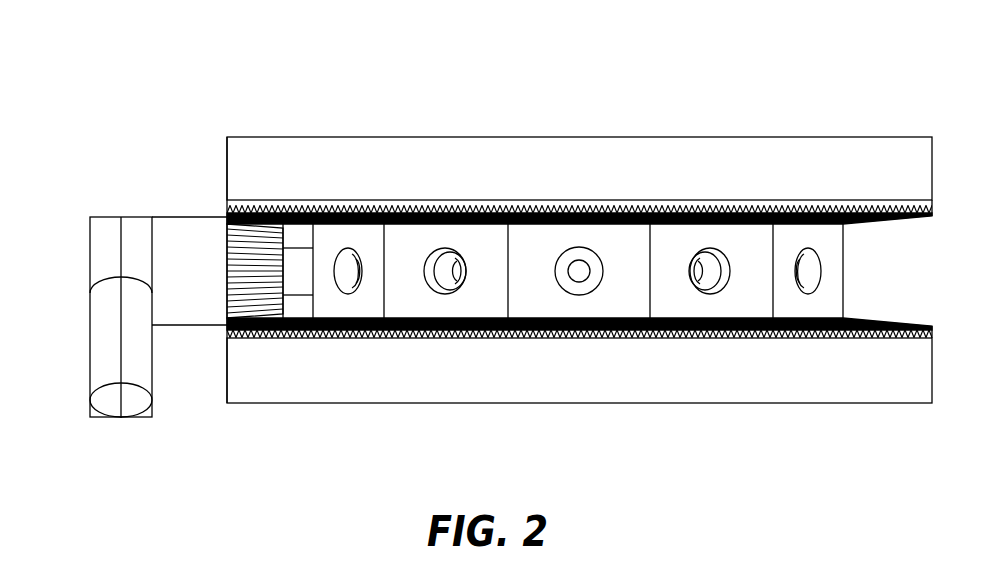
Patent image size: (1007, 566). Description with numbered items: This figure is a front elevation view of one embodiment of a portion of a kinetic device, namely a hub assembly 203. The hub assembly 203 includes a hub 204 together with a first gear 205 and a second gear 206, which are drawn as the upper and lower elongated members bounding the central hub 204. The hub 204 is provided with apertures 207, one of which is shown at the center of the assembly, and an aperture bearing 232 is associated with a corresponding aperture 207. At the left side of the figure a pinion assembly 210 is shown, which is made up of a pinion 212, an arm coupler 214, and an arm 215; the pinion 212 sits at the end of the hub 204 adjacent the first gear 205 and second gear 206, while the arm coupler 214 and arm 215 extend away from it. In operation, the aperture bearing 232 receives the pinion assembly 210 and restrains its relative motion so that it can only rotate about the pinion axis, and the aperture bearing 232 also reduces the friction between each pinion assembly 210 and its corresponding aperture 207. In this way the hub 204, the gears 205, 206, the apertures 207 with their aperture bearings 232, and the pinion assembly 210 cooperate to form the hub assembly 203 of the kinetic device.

The hub assembly 203 is at (547, 242).
The hub 204 is at (603, 204).
The first gear 205 is at (765, 137).
The second gear 206 is at (762, 403).
The aperture 207 is at (579, 248).
The pinion assembly 210 is at (122, 267).
The pinion 212 is at (227, 252).
The arm coupler 214 is at (97, 325).
The arm 215 is at (97, 400).
The aperture bearing 232 is at (450, 248).